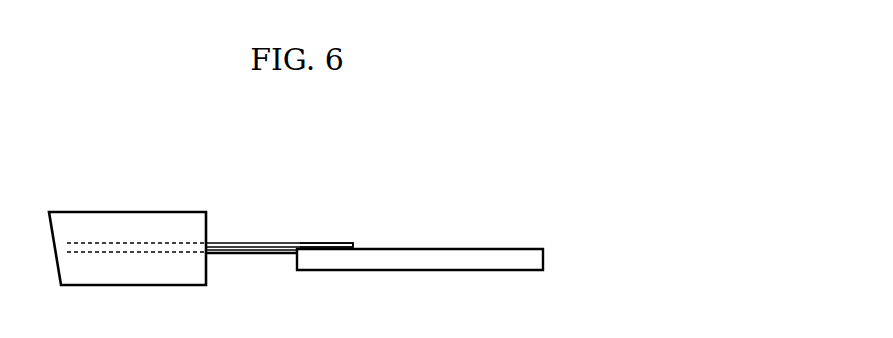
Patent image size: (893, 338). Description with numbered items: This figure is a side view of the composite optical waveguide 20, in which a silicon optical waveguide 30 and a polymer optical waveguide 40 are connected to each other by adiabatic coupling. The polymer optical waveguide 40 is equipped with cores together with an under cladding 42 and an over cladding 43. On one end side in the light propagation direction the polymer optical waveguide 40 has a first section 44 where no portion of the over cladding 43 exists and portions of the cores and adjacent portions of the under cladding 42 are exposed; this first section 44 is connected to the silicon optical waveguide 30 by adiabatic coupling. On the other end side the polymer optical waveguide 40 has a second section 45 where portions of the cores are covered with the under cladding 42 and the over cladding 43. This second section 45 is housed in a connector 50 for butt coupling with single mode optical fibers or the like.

The composite optical waveguide 20 is at (385, 176).
The silicon optical waveguide 30 is at (488, 248).
The polymer optical waveguide 40 is at (263, 243).
The under cladding 42 is at (223, 243).
The over cladding 43 is at (230, 255).
The first section 44 is at (324, 243).
The second section 45 is at (137, 253).
The connector 50 is at (127, 212).